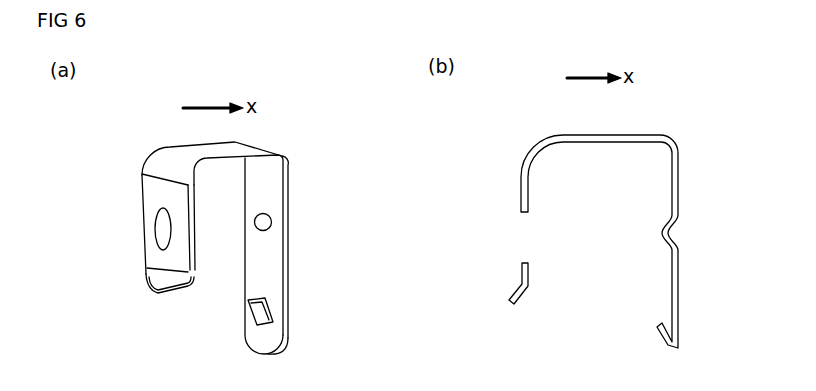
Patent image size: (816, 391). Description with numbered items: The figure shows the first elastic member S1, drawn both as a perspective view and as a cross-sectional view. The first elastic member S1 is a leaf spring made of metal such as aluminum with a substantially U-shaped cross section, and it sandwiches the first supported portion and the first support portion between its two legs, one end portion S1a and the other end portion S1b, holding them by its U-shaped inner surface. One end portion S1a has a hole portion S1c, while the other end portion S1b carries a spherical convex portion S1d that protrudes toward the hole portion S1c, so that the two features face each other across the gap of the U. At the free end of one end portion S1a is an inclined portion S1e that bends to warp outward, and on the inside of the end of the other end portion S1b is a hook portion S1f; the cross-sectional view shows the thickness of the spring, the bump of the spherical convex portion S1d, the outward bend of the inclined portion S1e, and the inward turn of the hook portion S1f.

The first elastic member S1 is at (140, 149).
The one end portion S1a is at (155, 190).
The other end portion S1b is at (262, 182).
The hole portion S1c is at (160, 231).
The spherical convex portion S1d is at (268, 228).
The inclined portion S1e is at (155, 278).
The hook portion S1f is at (273, 322).